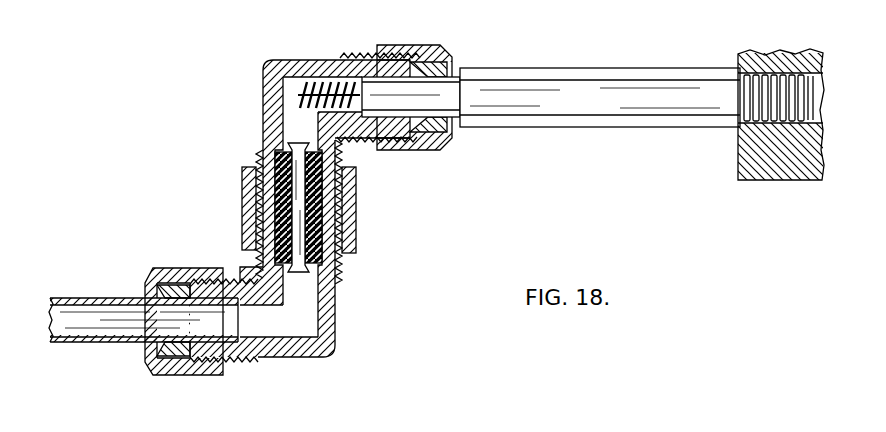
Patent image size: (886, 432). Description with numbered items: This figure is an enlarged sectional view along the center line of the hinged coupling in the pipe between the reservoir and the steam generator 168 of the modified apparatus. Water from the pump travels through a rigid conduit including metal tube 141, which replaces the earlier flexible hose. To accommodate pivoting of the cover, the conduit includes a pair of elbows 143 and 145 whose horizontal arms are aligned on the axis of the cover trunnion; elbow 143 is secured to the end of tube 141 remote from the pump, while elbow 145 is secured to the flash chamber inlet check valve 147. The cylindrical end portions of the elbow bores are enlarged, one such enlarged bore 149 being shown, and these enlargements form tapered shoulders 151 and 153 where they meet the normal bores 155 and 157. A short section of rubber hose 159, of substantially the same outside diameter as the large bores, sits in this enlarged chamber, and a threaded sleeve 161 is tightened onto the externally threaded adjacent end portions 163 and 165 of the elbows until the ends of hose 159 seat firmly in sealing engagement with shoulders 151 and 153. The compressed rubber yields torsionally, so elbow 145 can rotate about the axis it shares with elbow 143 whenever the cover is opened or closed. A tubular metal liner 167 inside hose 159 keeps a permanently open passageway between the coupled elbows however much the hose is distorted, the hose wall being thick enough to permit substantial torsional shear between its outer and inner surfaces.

The metal tube 141 is at (100, 345).
The elbow 143 is at (338, 316).
The elbow 145 is at (262, 93).
The flash chamber inlet check valve 147 is at (610, 68).
The enlarged bore 149 is at (262, 172).
The tapered shoulder 151 is at (345, 287).
The tapered shoulder 153 is at (340, 152).
The normal bore 155 is at (273, 323).
The normal bore 157 is at (276, 62).
The rubber hose 159 is at (350, 208).
The threaded sleeve 161 is at (350, 240).
The externally threaded end portion 163 is at (342, 228).
The externally threaded end portion 165 is at (240, 190).
The tubular metal liner 167 is at (256, 262).
The steam generator 168 is at (766, 176).